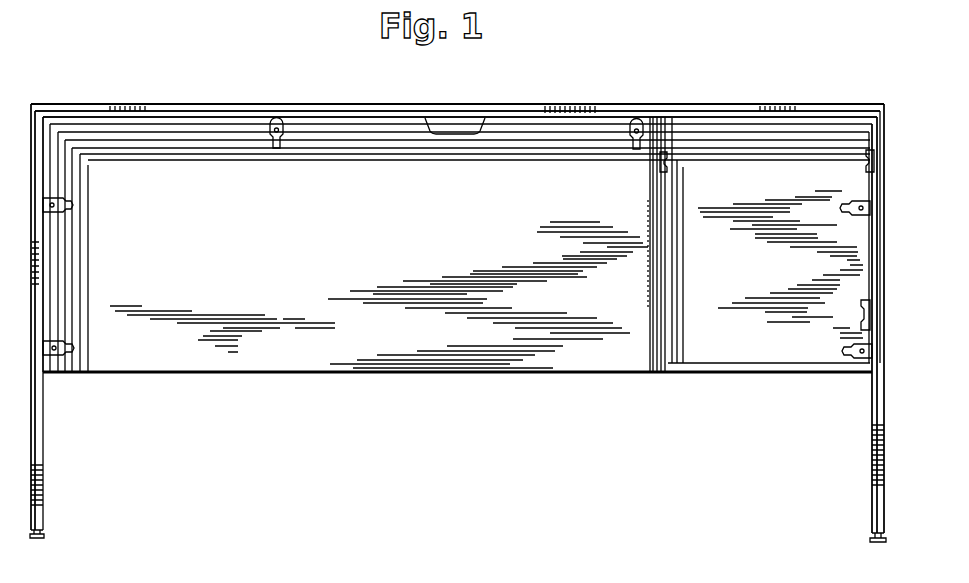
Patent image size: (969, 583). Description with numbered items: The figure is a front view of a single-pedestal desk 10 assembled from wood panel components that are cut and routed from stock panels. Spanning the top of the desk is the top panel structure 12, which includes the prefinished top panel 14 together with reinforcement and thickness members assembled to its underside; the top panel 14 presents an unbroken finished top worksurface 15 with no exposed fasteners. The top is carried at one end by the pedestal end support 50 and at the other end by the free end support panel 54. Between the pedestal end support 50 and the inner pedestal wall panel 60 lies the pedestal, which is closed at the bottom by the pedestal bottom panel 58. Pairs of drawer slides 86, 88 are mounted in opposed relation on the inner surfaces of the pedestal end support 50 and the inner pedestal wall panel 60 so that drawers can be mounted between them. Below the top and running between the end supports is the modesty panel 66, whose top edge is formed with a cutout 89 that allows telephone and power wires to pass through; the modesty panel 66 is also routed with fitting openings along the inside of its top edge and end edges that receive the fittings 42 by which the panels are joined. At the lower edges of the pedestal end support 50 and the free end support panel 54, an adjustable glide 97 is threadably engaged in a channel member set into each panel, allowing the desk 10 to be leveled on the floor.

The single-pedestal desk 10 is at (538, 96).
The top panel structure 12 is at (598, 105).
The top panel 14 is at (391, 104).
The top worksurface 15 is at (307, 104).
The cutout 89 is at (455, 122).
The fittings 42 is at (281, 150).
The drawer slide 86 is at (866, 161).
The drawer slide 88 is at (862, 314).
The modesty panel 66 is at (262, 350).
The inner pedestal wall panel 60 is at (648, 338).
The pedestal bottom panel 58 is at (758, 373).
The pedestal end support 50 is at (870, 404).
The free end support panel 54 is at (48, 428).
The adjustable glide 97 is at (44, 534).